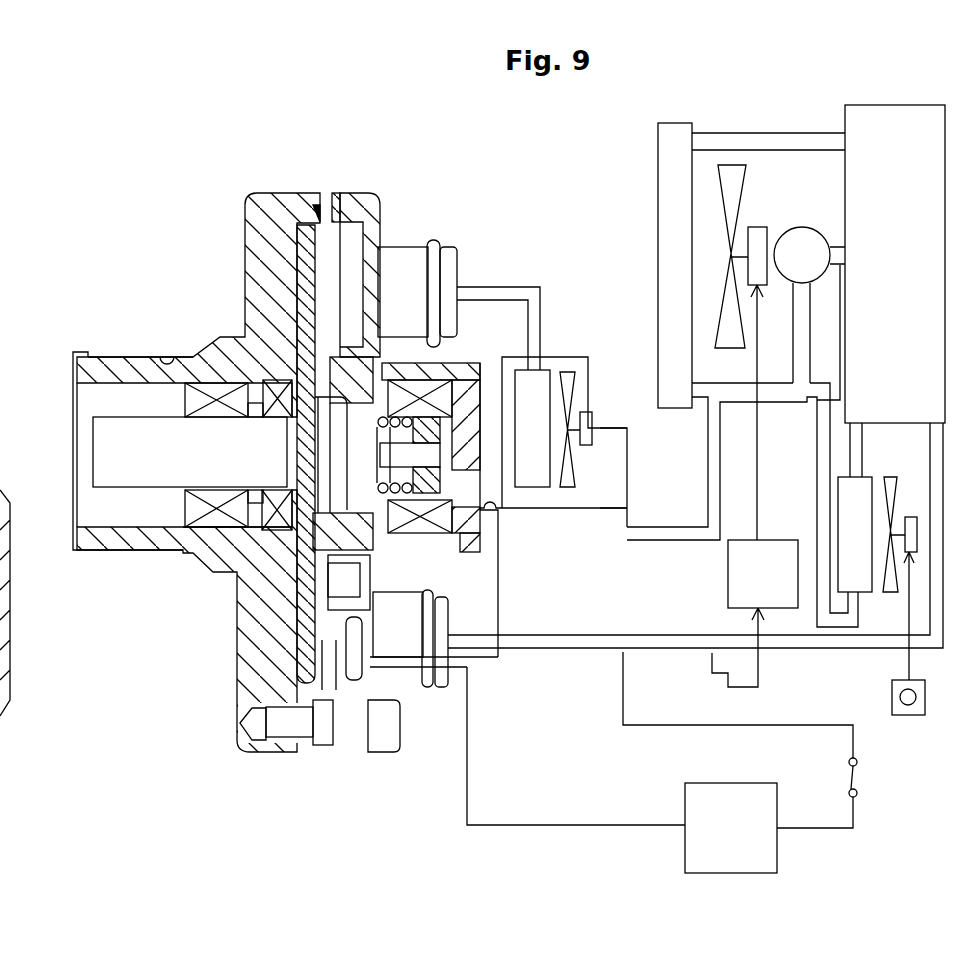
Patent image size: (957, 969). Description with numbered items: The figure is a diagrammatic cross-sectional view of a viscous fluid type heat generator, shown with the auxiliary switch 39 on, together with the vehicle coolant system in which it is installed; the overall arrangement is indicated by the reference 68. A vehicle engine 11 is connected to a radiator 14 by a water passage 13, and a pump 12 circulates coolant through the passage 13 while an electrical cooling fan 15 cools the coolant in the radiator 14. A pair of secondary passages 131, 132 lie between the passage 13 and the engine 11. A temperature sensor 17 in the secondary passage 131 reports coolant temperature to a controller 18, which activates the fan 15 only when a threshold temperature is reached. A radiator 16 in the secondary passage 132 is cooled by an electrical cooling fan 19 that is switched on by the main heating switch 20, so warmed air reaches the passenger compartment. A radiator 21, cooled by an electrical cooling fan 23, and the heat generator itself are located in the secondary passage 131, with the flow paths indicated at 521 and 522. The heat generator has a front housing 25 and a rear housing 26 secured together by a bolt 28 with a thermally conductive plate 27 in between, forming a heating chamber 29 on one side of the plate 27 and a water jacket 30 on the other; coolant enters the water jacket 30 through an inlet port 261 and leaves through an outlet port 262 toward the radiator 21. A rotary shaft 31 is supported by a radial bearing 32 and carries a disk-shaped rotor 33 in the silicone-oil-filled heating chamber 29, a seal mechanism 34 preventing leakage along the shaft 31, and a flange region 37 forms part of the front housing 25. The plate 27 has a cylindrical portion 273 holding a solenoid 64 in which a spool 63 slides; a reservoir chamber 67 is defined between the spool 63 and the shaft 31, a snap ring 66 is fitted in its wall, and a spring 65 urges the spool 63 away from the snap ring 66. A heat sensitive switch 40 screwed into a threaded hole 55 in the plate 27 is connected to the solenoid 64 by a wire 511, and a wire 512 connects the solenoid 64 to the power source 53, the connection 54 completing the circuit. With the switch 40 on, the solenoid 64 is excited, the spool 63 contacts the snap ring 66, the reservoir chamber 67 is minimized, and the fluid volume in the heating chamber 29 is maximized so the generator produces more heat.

The vehicle engine 11 is at (890, 105).
The pump 12 is at (805, 228).
The water passage 13 is at (773, 133).
The radiator 14 is at (657, 217).
The electrical cooling fan 15 is at (748, 180).
The radiator 16 is at (864, 477).
The temperature sensor 17 is at (713, 672).
The controller 18 is at (770, 540).
The electrical cooling fan 19 is at (890, 592).
The main heating switch 20 is at (907, 716).
The radiator 21 is at (540, 485).
The electrical cooling fan 23 is at (576, 390).
The front housing 25 is at (253, 212).
The rear housing 26 is at (357, 200).
The plate 27 is at (334, 195).
The bolt 28 is at (387, 742).
The heating chamber 29 is at (287, 193).
The water jacket 30 is at (350, 588).
The rotary shaft 31 is at (117, 440).
The radial bearing 32 is at (240, 383).
The disk-shaped rotor 33 is at (300, 287).
The seal mechanism 34 is at (267, 530).
The flange 37 is at (163, 356).
The auxiliary switch 39 is at (857, 790).
The heat sensitive switch 40 is at (360, 680).
The power source 53 is at (778, 848).
The lead wire 54 is at (562, 823).
The threaded hole 55 is at (290, 623).
The spool 63 is at (377, 452).
The solenoid 64 is at (437, 370).
The spring 65 is at (423, 537).
The snap ring 66 is at (380, 410).
The reservoir chamber 67 is at (317, 433).
The heating system 68 is at (451, 147).
The secondary passage 131 is at (587, 532).
The secondary passage 132 is at (817, 640).
The inlet port 261 is at (427, 688).
The outlet port 262 is at (405, 247).
The cylindrical portion 273 is at (473, 553).
The wire 511 is at (487, 528).
The wire 512 is at (628, 507).
The evaporator case 521 is at (572, 357).
The passage 522 is at (628, 433).